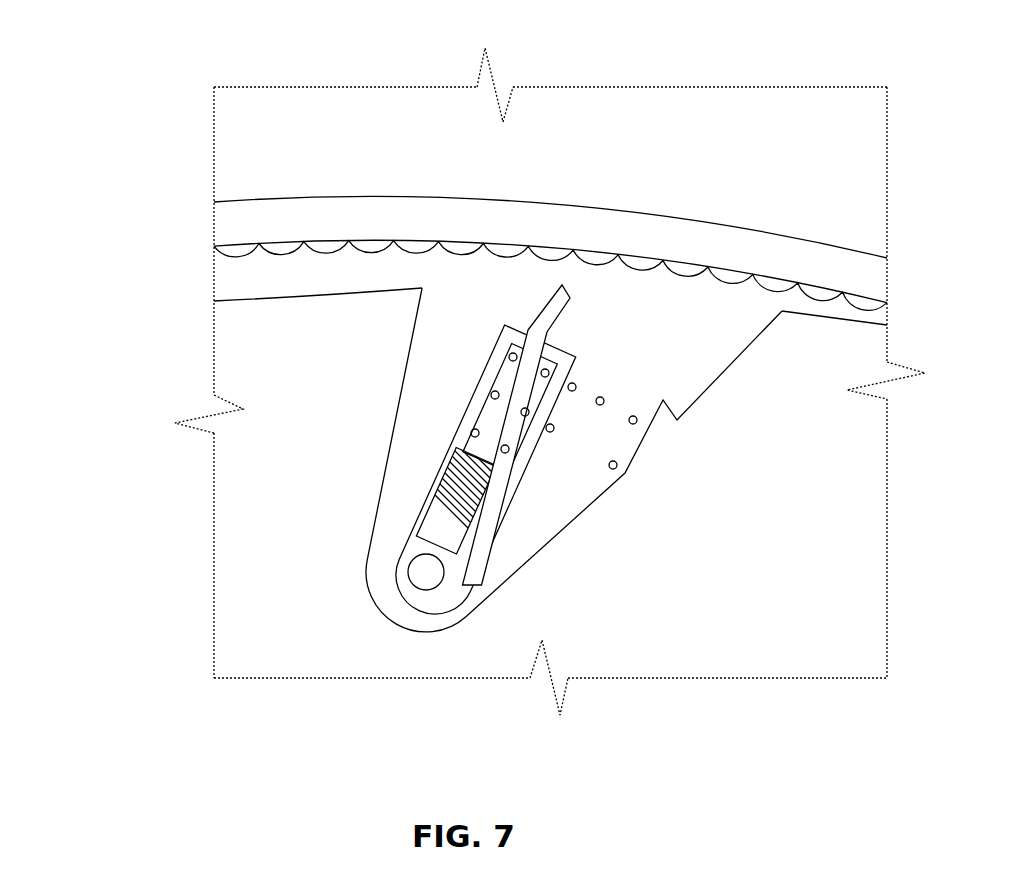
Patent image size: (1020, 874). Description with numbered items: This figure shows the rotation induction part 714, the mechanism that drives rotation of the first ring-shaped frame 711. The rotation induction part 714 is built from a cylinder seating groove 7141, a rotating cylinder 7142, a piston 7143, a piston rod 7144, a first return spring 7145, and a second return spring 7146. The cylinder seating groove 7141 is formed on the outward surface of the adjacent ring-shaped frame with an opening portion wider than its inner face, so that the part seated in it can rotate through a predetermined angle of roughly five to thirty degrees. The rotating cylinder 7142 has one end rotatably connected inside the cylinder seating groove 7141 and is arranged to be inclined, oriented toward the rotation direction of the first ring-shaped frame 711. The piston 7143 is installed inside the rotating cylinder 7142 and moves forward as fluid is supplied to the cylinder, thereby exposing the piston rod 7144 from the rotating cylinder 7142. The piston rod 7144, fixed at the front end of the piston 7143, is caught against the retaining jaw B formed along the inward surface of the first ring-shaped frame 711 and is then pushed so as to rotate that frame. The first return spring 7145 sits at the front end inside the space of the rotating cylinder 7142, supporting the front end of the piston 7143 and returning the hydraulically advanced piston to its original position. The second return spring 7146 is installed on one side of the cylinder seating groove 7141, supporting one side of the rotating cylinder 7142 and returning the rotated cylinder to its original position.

The rotation induction part 714 is at (128, 58).
The first ring-shaped frame 711 is at (268, 206).
The retaining jaw B is at (226, 252).
The cylinder seating groove 7141 is at (553, 493).
The rotating cylinder 7142 is at (428, 495).
The piston 7143 is at (462, 448).
The piston rod 7144 is at (552, 313).
The first return spring 7145 is at (492, 395).
The second return spring 7146 is at (578, 445).